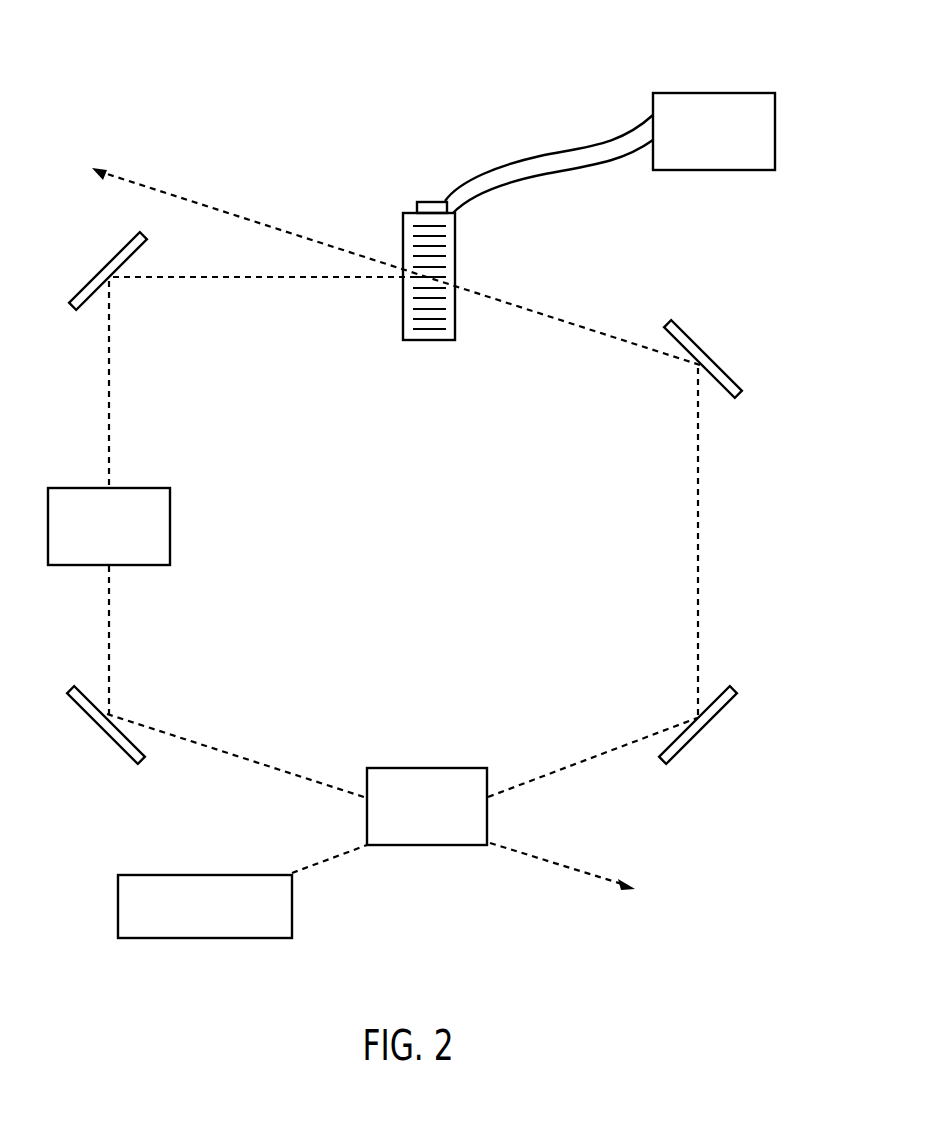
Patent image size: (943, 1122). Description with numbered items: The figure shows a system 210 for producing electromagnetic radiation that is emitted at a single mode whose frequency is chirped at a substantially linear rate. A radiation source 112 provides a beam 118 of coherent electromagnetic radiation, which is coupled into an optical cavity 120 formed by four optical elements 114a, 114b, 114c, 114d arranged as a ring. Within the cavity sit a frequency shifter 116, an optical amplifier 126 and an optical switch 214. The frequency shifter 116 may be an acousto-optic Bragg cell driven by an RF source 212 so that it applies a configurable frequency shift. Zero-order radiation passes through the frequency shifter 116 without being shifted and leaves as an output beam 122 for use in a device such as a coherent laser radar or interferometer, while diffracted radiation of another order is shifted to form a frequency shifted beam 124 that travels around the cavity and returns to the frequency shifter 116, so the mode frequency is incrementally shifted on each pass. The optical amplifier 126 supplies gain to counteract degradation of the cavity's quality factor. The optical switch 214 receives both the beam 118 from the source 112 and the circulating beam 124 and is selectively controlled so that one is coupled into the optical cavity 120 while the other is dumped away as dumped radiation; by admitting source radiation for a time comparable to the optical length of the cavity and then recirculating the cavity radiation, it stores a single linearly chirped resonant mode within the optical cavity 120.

The system 210 is at (170, 70).
The optical cavity 120 is at (418, 527).
The frequency shifted beam 124 is at (220, 280).
The output beam 122 is at (236, 212).
The optical element 114a is at (107, 733).
The optical element 114b is at (717, 716).
The optical element 114c is at (704, 348).
The optical element 114d is at (135, 258).
The frequency shifter 116 is at (456, 242).
The RF source 212 is at (776, 112).
The optical amplifier 126 is at (171, 530).
The optical switch 214 is at (437, 768).
The beam 118 is at (311, 868).
The radiation source 112 is at (200, 940).